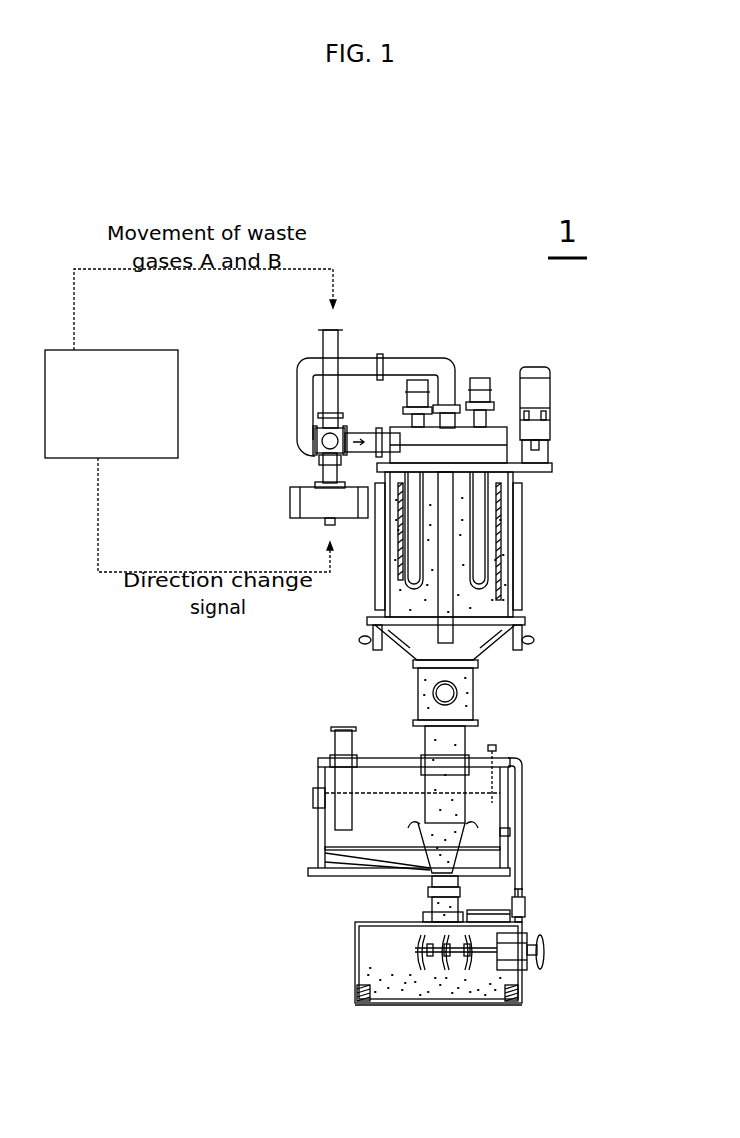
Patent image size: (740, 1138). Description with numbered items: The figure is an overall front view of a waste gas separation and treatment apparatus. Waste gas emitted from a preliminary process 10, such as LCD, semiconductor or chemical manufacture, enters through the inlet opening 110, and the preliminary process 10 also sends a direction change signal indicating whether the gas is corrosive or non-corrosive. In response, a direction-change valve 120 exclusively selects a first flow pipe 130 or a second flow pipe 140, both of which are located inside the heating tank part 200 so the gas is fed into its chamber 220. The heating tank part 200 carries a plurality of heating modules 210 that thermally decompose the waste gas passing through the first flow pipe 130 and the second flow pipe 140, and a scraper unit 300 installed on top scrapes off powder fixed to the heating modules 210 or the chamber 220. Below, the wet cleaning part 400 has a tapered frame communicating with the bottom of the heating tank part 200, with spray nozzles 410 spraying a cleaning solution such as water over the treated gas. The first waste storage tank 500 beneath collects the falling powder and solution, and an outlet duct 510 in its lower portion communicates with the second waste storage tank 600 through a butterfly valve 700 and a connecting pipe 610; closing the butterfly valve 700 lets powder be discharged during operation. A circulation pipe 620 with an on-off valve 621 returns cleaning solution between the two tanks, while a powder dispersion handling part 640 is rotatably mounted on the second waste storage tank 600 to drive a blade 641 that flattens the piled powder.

The preliminary process 10 is at (130, 350).
The inlet opening 110 is at (323, 338).
The direction-change valve 120 is at (290, 437).
The first flow pipe 130 is at (397, 428).
The second flow pipe 140 is at (453, 360).
The heating tank part 200 is at (538, 557).
The heating module 210 is at (414, 385).
The chamber 220 is at (483, 596).
The scraper unit 300 is at (568, 435).
The wet cleaning part 400 is at (520, 620).
The spray nozzle 410 is at (367, 646).
The first waste storage tank 500 is at (298, 808).
The outlet duct 510 is at (323, 862).
The second waste storage tank 600 is at (328, 970).
The connecting pipe 610 is at (427, 916).
The circulation pipe 620 is at (520, 842).
The on-off valve 621 is at (528, 913).
The powder dispersion handling part 640 is at (546, 948).
The stirring paddles 641 is at (500, 967).
The butterfly valve 700 is at (428, 889).